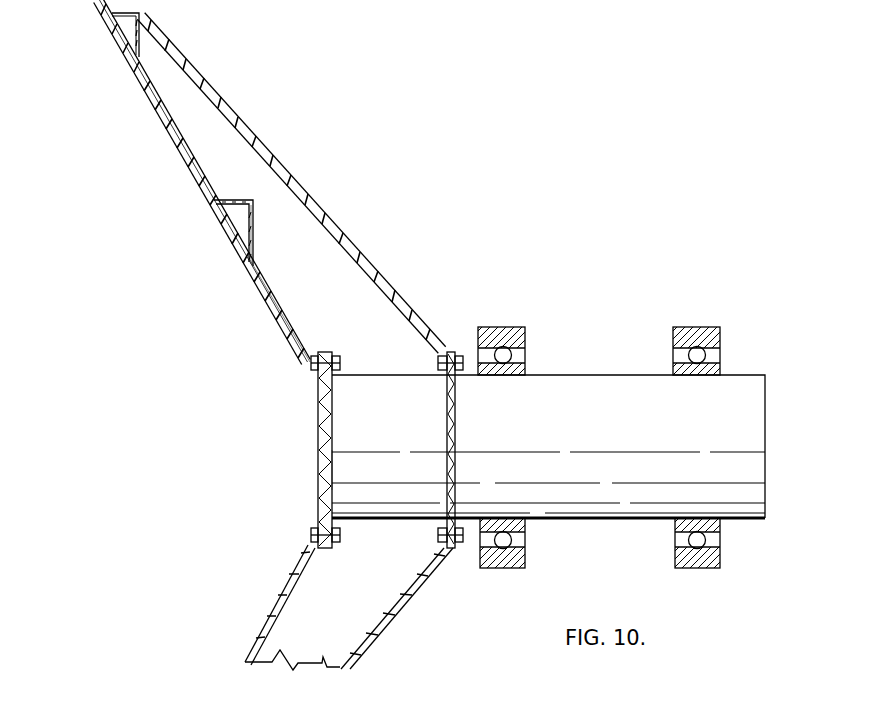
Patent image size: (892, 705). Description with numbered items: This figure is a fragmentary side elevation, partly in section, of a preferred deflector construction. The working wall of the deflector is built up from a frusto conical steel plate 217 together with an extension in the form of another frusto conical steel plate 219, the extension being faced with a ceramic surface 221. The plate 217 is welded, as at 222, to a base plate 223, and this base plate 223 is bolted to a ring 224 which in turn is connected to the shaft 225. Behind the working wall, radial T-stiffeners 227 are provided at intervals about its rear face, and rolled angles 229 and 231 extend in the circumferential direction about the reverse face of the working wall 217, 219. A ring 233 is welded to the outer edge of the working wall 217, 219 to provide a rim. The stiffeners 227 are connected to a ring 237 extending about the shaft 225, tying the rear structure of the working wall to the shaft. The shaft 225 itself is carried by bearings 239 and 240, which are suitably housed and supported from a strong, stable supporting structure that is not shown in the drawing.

The frusto conical steel plate 217 is at (262, 290).
The frusto conical steel plate extension 219 is at (195, 173).
The ceramic surface 221 is at (170, 141).
The weld 222 is at (312, 368).
The base plate 223 is at (322, 468).
The ring 224 is at (335, 470).
The shaft 225 is at (585, 375).
The radial T-stiffeners 227 is at (322, 208).
The rolled angle 229 is at (138, 44).
The rolled angle 231 is at (253, 210).
The ring 233 is at (69, 0).
The ring 237 is at (455, 427).
The bearing 239 is at (502, 568).
The bearing 240 is at (690, 568).